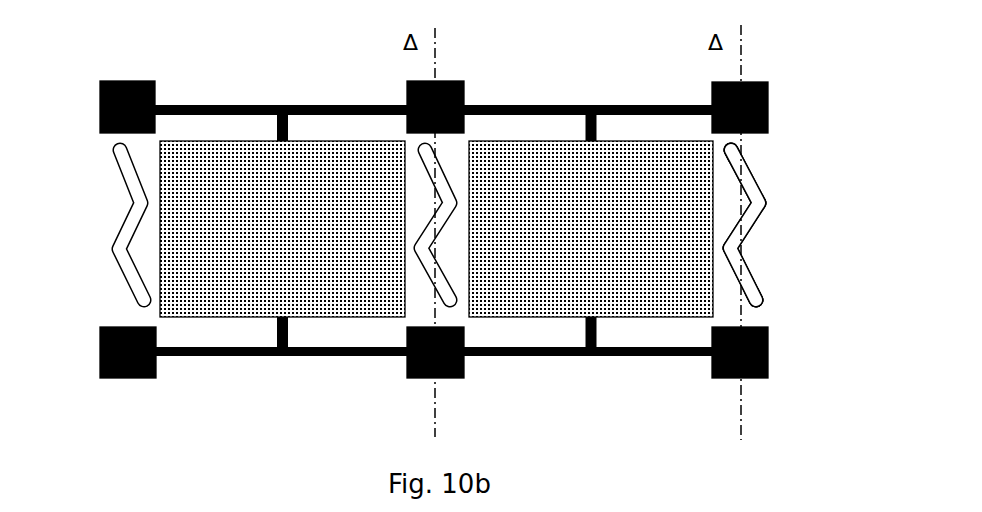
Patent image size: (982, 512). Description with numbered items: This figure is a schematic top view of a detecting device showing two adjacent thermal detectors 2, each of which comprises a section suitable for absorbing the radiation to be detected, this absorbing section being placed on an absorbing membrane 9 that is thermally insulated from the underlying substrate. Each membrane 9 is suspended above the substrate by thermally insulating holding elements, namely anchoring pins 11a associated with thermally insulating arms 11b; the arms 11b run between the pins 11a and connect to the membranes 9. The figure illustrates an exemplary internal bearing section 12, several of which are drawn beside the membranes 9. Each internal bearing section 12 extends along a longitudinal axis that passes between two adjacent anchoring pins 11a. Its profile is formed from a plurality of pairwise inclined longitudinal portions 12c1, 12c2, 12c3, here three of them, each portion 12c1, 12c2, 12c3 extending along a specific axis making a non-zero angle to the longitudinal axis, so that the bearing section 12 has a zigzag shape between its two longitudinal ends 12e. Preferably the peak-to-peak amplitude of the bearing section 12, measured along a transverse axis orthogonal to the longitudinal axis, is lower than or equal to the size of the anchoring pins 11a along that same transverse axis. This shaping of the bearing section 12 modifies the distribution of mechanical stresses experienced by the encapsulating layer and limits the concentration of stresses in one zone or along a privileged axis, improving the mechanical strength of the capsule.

The thermal detector 2 is at (208, 70).
The membrane 9 is at (546, 318).
The anchoring pin 11a is at (768, 108).
The thermally insulating arm 11b is at (227, 356).
The internal bearing section 12 is at (105, 272).
The longitudinal portion 12c1 is at (757, 178).
The longitudinal portion 12c2 is at (757, 223).
The longitudinal portion 12c3 is at (755, 265).
The longitudinal end 12e is at (740, 150).